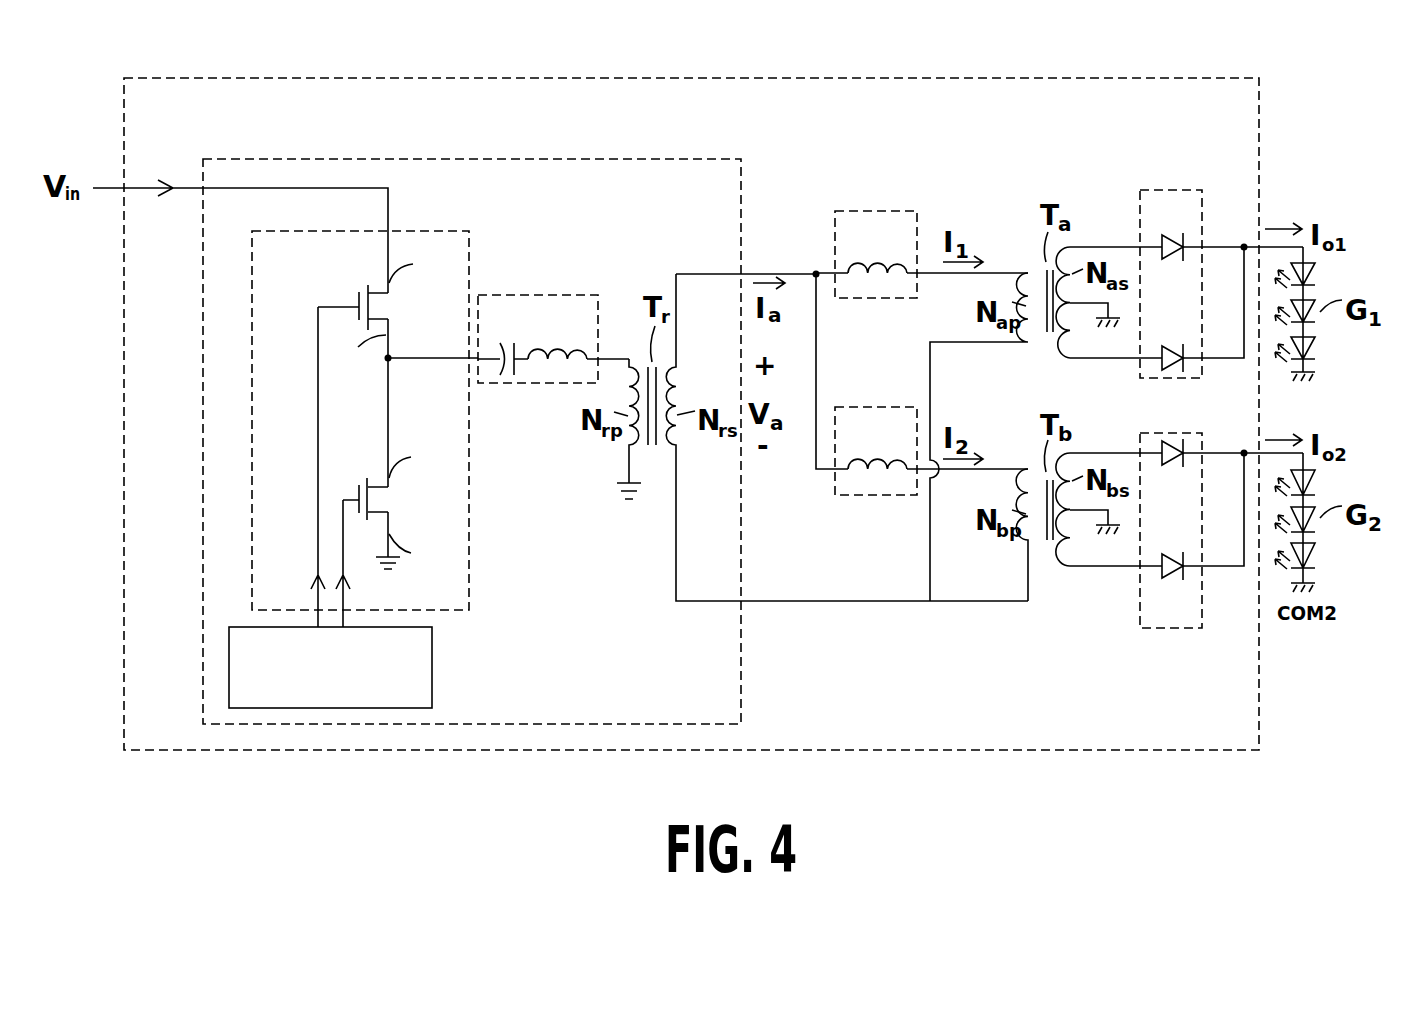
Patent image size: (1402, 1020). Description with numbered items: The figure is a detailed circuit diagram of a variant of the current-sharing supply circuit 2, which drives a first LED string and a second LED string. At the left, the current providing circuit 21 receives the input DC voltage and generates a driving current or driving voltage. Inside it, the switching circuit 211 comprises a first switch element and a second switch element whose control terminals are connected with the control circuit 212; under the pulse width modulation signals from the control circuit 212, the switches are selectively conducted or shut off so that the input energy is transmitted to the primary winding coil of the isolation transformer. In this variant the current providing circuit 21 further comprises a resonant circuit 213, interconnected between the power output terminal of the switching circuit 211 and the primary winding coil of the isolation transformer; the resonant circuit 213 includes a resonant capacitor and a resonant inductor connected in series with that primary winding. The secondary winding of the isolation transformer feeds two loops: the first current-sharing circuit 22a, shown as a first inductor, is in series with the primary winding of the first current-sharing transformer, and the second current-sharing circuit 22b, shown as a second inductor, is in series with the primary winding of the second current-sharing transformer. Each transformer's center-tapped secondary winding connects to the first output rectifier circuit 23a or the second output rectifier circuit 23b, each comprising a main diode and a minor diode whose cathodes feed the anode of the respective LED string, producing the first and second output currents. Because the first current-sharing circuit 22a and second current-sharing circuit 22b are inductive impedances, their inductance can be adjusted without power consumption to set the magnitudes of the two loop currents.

The current-sharing supply circuit 2 is at (1138, 77).
The current providing circuit 21 is at (437, 157).
The switching circuit 211 is at (415, 229).
The control circuit 212 is at (432, 668).
The resonant circuit 213 is at (540, 296).
The first current-sharing circuit 22a is at (862, 210).
The second current-sharing circuit 22b is at (862, 406).
The first output rectifier circuit 23a is at (1172, 189).
The second output rectifier circuit 23b is at (1170, 432).